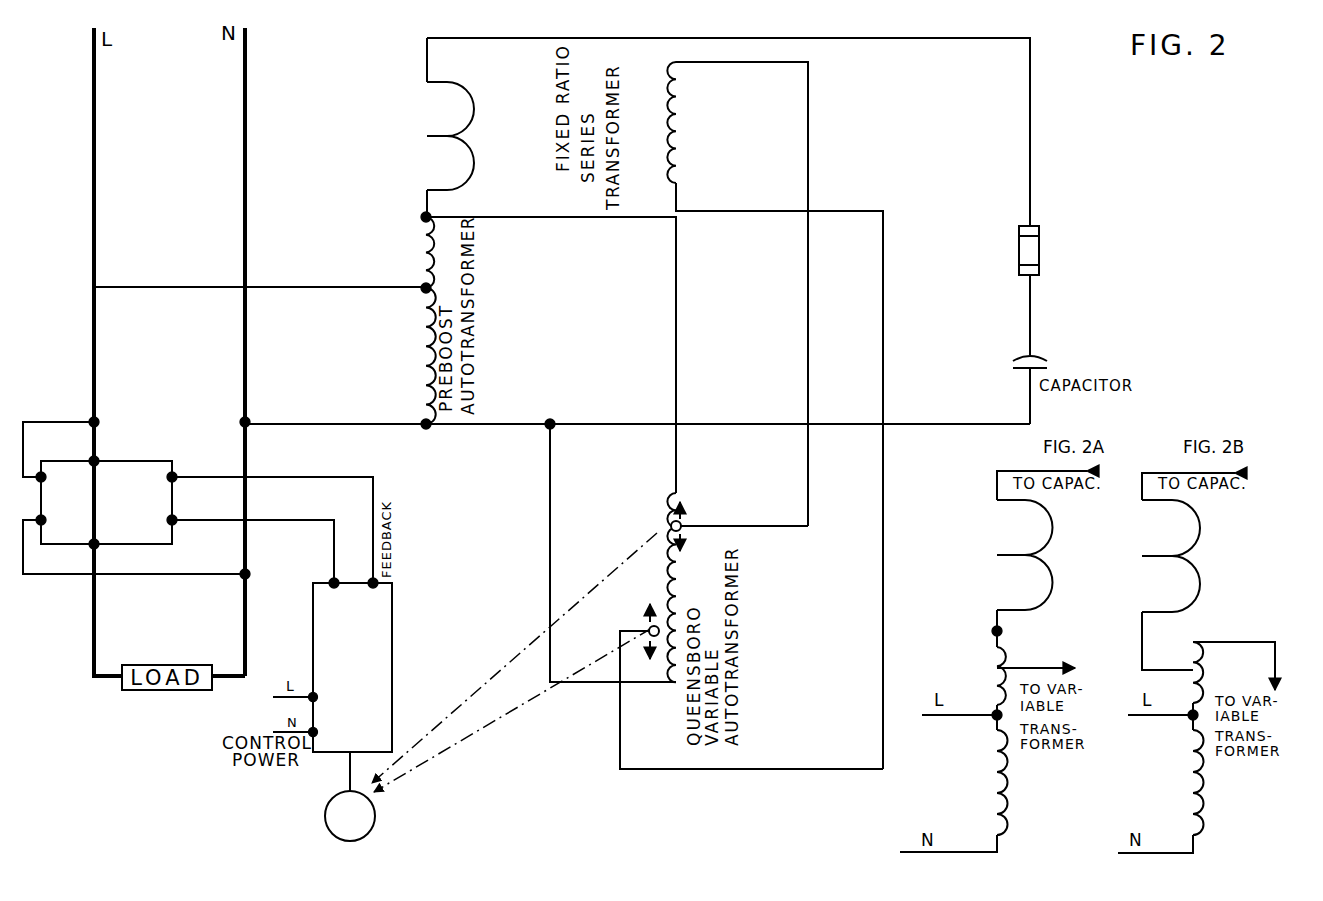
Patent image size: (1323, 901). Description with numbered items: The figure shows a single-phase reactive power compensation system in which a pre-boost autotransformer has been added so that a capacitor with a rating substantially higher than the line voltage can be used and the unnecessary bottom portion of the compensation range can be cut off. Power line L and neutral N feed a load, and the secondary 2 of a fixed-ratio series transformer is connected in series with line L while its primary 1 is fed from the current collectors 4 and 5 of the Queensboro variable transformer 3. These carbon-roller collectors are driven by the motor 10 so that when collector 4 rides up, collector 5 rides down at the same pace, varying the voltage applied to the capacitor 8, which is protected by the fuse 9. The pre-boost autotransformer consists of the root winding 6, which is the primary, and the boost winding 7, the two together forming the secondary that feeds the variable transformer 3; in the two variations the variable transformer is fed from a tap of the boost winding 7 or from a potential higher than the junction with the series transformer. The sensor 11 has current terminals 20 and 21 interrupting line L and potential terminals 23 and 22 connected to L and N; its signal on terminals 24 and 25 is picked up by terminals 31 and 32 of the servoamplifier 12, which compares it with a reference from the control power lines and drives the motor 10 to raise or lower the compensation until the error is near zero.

In FIG. 2, the primary of fixed-ratio series transformer 1 is at (681, 122).
In FIG. 2, the secondary of fixed-ratio series transformer 2 is at (458, 136).
In FIG. 2A, the secondary of fixed-ratio series transformer 2 is at (1039, 555).
In FIG. 2B, the secondary of fixed-ratio series transformer 2 is at (1184, 556).
In FIG. 2, the variable transformer 3 is at (655, 587).
In FIG. 2, the current collector 4 is at (739, 524).
In FIG. 2, the current collector 5 is at (751, 686).
In FIG. 2, the root winding of pre-boost autotransformer 6 is at (417, 356).
In FIG. 2A, the root winding of pre-boost autotransformer 6 is at (984, 782).
In FIG. 2B, the root winding of pre-boost autotransformer 6 is at (1184, 782).
In FIG. 2, the boost winding of pre-boost autotransformer 7 is at (416, 252).
In FIG. 2A, the boost winding of pre-boost autotransformer 7 is at (1021, 676).
In FIG. 2B, the boost winding of pre-boost autotransformer 7 is at (1234, 672).
In FIG. 2, the capacitor 8 is at (1038, 360).
In FIG. 2, the fuse 9 is at (1038, 250).
In FIG. 2, the motor 10 is at (350, 809).
In FIG. 2, the sensor 11 is at (106, 518).
In FIG. 2, the servoamplifier 12 is at (366, 667).
In FIG. 2, the current terminal 20 is at (105, 453).
In FIG. 2, the current terminal 21 is at (84, 537).
In FIG. 2, the potential terminal 22 is at (53, 518).
In FIG. 2, the potential terminal 23 is at (53, 475).
In FIG. 2, the sensor output terminal 24 is at (161, 479).
In FIG. 2, the sensor output terminal 25 is at (161, 520).
In FIG. 2, the servoamplifier terminal 31 is at (326, 575).
In FIG. 2, the servoamplifier terminal 32 is at (364, 575).